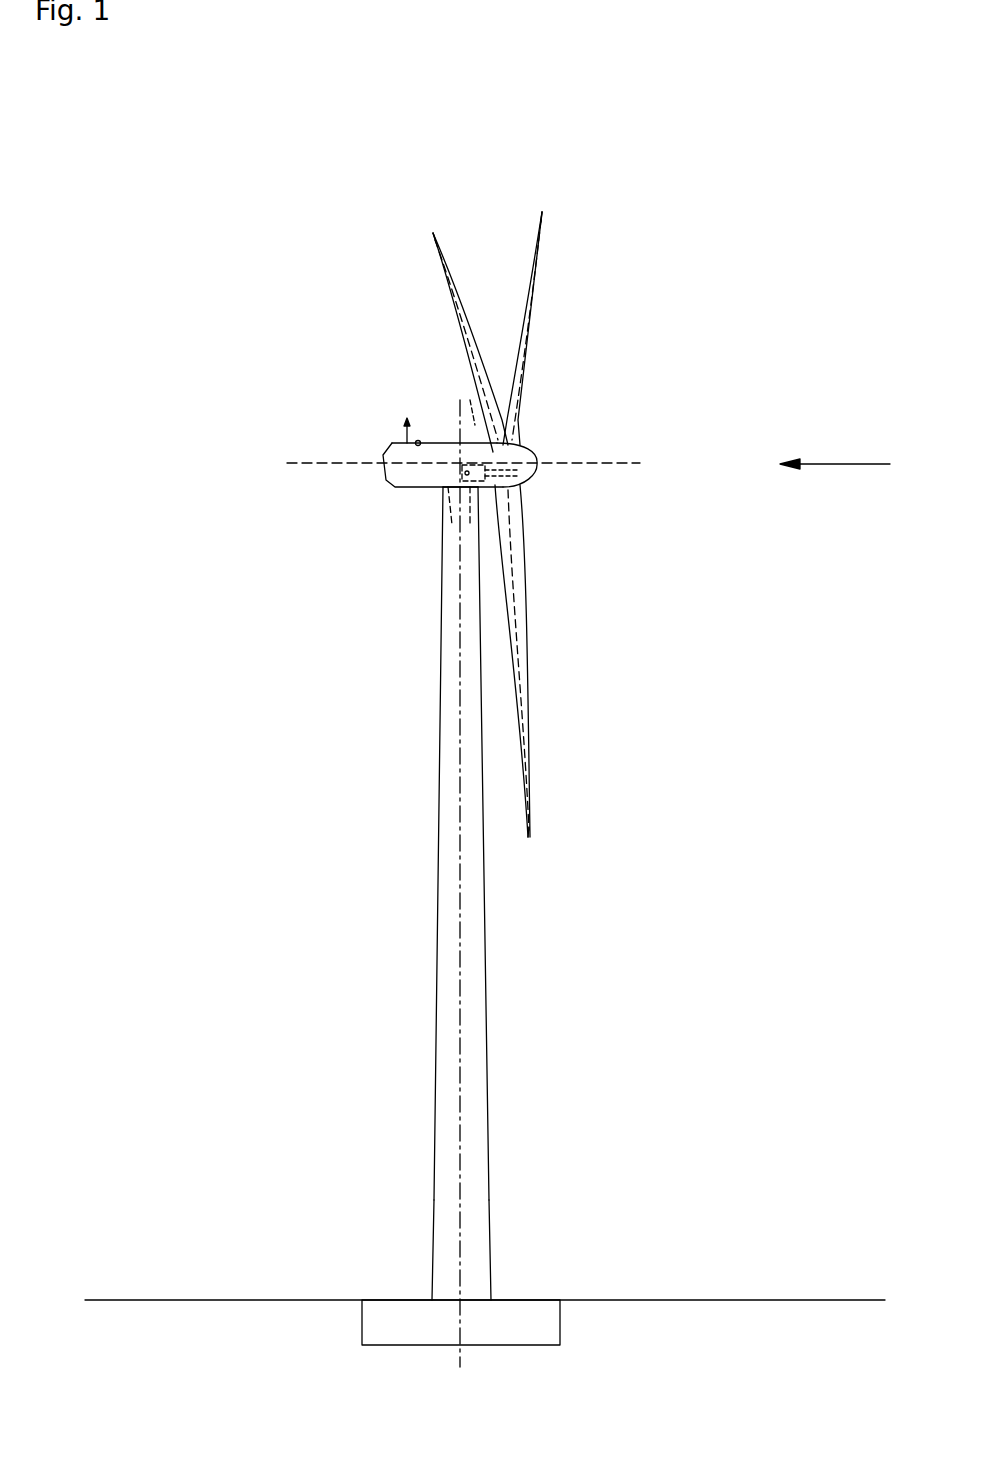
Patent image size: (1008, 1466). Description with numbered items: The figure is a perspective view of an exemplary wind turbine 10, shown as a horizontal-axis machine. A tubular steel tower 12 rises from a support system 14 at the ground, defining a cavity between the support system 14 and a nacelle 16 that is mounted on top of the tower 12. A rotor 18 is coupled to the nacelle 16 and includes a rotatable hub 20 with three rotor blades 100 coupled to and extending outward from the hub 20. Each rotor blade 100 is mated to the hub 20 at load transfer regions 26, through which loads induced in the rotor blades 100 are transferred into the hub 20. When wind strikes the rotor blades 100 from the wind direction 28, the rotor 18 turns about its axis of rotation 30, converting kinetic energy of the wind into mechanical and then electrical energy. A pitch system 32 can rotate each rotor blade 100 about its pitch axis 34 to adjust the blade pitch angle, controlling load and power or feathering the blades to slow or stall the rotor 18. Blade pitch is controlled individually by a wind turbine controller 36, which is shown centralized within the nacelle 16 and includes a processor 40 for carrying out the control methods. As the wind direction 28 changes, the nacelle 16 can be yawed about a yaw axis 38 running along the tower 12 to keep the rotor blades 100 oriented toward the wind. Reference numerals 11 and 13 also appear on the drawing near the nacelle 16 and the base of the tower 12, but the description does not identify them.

The wind turbine 10 is at (200, 232).
The yaw bearing 11 is at (448, 493).
The tower 12 is at (435, 1058).
The tower base 13 is at (485, 1273).
The support system 14 is at (387, 1317).
The nacelle 16 is at (385, 482).
The rotor 18 is at (650, 392).
The rotatable hub 20 is at (533, 457).
The load transfer regions 26 is at (522, 493).
The wind direction 28 is at (855, 463).
The axis of rotation 30 is at (603, 463).
The pitch system 32 is at (527, 525).
The pitch axes 34 is at (432, 237).
The wind turbine controller 36 is at (450, 523).
The yaw axis 38 is at (460, 938).
The processor 40 is at (473, 413).
The rotor blade 100 is at (455, 303).